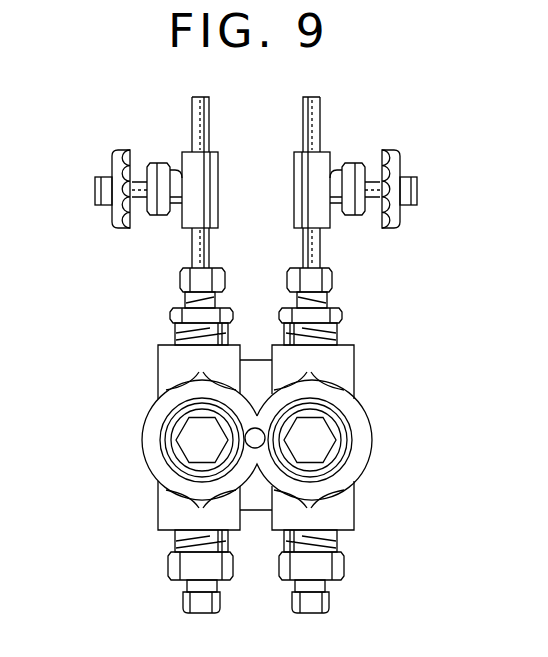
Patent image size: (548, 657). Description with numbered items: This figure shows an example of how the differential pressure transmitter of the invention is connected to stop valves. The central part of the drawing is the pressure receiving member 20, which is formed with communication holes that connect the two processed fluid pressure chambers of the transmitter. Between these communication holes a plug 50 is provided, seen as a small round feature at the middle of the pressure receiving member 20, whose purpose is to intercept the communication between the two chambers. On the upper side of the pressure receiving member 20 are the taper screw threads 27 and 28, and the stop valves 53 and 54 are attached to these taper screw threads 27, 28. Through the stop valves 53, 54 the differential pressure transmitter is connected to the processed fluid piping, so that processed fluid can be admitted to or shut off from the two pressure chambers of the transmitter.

The pressure receiving member 20 is at (352, 380).
The taper screw thread 27 is at (345, 334).
The taper screw thread 28 is at (177, 343).
The plug 50 is at (250, 447).
The stop valve 53 is at (113, 154).
The stop valve 54 is at (396, 217).